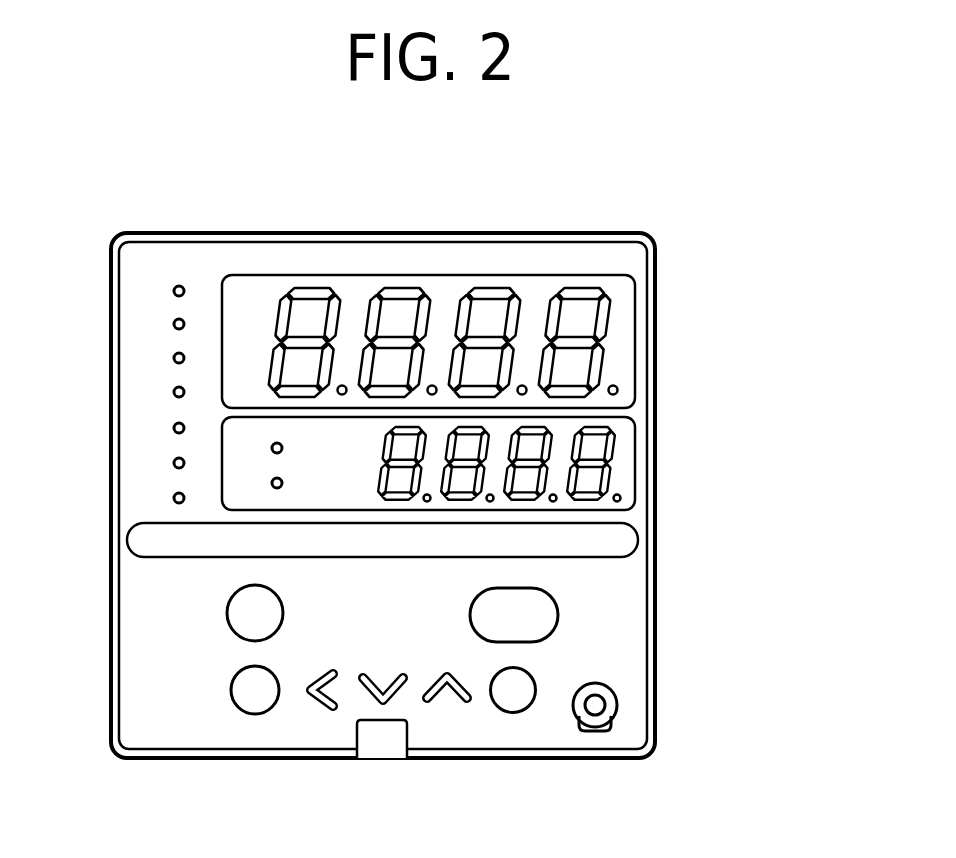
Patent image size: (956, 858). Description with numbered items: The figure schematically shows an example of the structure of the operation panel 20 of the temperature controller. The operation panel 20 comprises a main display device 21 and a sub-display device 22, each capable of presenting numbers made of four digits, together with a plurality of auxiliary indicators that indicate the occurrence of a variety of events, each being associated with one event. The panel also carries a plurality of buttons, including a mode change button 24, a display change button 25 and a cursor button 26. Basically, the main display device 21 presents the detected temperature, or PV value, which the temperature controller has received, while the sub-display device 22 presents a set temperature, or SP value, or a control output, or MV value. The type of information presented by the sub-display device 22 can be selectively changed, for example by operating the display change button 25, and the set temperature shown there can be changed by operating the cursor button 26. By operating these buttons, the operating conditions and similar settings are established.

The operation panel 20 is at (658, 279).
The main display device 21 is at (620, 345).
The sub-display device 22 is at (627, 467).
The mode change button 24 is at (245, 612).
The display change button 25 is at (540, 612).
The cursor button 26 is at (403, 698).